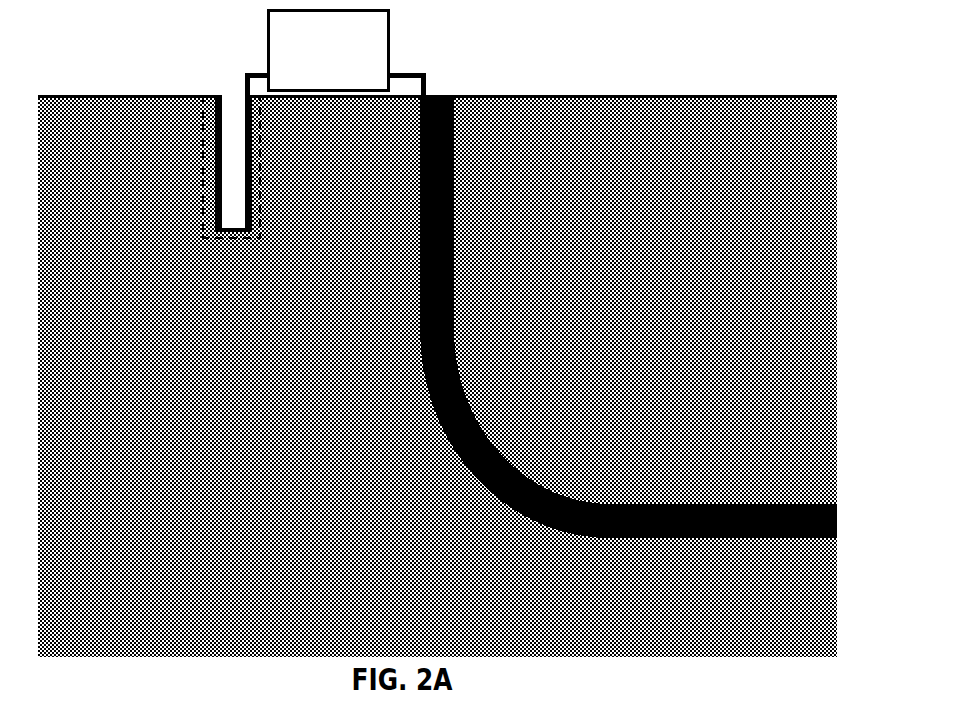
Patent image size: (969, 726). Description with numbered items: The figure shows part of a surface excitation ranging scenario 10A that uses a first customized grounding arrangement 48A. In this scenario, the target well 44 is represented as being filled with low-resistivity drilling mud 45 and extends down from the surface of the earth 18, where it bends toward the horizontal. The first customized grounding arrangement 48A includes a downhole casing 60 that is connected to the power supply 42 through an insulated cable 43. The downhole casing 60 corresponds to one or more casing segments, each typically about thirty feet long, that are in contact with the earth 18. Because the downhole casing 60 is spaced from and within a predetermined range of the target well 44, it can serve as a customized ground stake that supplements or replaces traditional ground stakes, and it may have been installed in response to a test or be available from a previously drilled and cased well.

The surface excitation ranging scenario 10A is at (593, 52).
The earth 18 is at (60, 136).
The power supply 42 is at (267, 35).
The insulated cable 43 is at (243, 75).
The target well 44 is at (530, 517).
The low-resistivity drilling mud 45 is at (512, 483).
The first customized grounding arrangement 48A is at (203, 118).
The downhole casing 60 is at (211, 236).